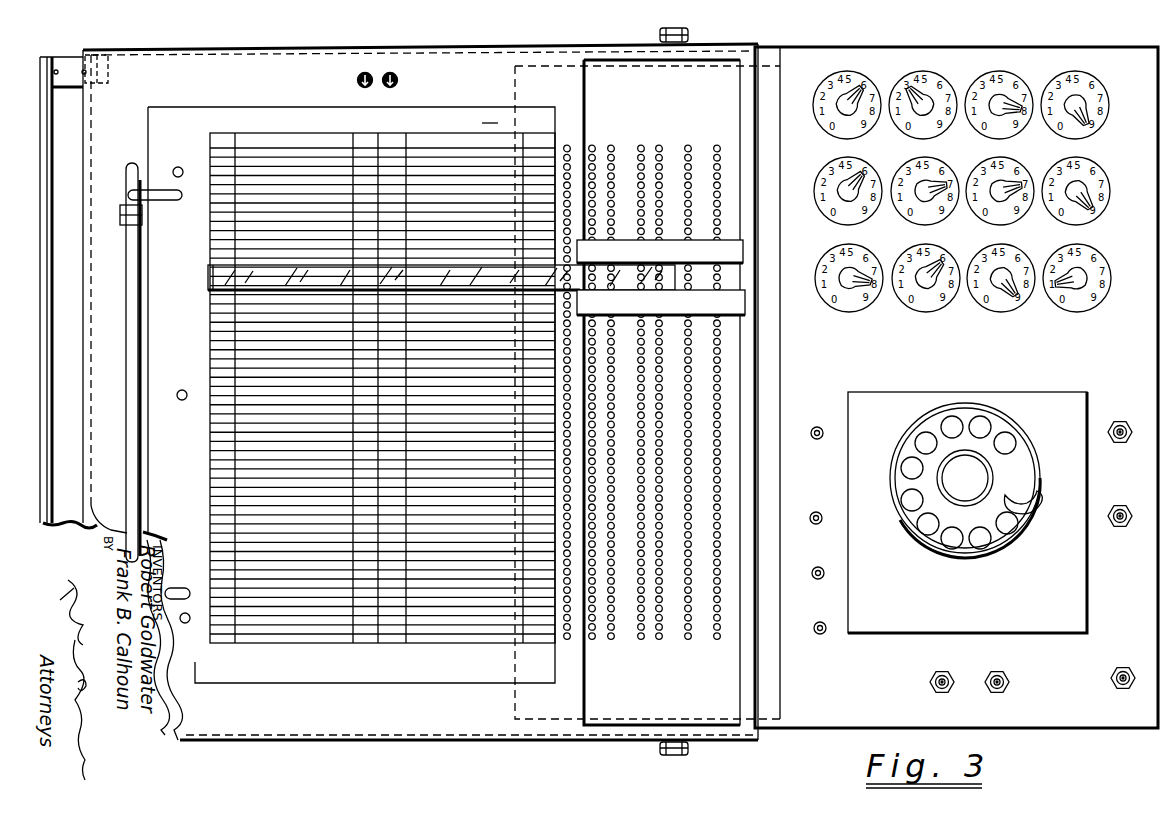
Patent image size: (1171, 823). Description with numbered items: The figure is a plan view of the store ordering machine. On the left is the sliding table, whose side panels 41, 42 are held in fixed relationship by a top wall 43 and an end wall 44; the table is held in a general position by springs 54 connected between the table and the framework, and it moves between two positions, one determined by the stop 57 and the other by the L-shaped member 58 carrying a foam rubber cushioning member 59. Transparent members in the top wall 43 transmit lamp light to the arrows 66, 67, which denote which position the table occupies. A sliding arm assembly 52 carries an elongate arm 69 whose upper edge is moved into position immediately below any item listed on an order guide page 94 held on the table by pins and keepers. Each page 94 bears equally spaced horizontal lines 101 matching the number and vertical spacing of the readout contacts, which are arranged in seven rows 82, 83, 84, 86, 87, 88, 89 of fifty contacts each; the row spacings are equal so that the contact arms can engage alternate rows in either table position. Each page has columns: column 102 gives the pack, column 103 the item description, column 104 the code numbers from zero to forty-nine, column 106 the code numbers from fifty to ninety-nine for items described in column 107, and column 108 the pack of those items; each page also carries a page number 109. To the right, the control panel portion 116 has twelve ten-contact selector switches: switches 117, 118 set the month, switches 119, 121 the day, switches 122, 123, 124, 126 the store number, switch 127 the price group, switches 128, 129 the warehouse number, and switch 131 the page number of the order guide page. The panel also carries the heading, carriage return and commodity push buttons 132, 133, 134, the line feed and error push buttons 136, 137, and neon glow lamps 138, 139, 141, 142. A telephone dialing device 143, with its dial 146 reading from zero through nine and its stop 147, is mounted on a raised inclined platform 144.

The side panel 41 is at (372, 742).
The side panel 42 is at (275, 47).
The top wall 43 is at (254, 95).
The end wall 44 is at (78, 71).
The sliding arm assembly 52 is at (700, 312).
The springs 54 is at (664, 30).
The stop 57 is at (40, 69).
The L-shaped member 58 is at (109, 60).
The foam rubber cushioning member 59 is at (97, 66).
The arrow 66 is at (357, 80).
The arrow 67 is at (398, 80).
The arm 69 is at (210, 280).
The row of contacts 82 is at (565, 141).
The row of contacts 83 is at (592, 140).
The row of contacts 84 is at (611, 140).
The row of contacts 86 is at (641, 140).
The row of contacts 87 is at (659, 140).
The row of contacts 88 is at (688, 140).
The row of contacts 89 is at (717, 140).
The order guide page 94 is at (188, 116).
The horizontal lines 101 is at (211, 215).
The column 102 is at (230, 643).
The column 103 is at (302, 643).
The column 104 is at (359, 132).
The column 106 is at (393, 133).
The column 107 is at (470, 643).
The column 108 is at (539, 132).
The page number 109 is at (484, 108).
The control panel portion 116 is at (1043, 46).
The selector switch 117 is at (819, 83).
The selector switch 118 is at (910, 78).
The selector switch 119 is at (984, 78).
The selector switch 121 is at (1036, 86).
The selector switch 122 is at (830, 222).
The selector switch 123 is at (912, 220).
The selector switch 124 is at (1017, 219).
The selector switch 126 is at (1092, 219).
The selector switch 127 is at (826, 299).
The selector switch 128 is at (907, 310).
The selector switch 129 is at (1004, 308).
The selector switch 131 is at (1084, 306).
The heading push button 132 is at (1116, 420).
The carriage return push button 133 is at (946, 674).
The commodity push button 134 is at (1120, 505).
The line feed push button 136 is at (1002, 674).
The error push button 137 is at (1119, 671).
The lamp 138 is at (823, 633).
The lamp 139 is at (817, 580).
The lamp 141 is at (815, 511).
The lamp 142 is at (817, 426).
The telephone dialing device 143 is at (1038, 441).
The raised inclined platform 144 is at (1056, 392).
The dial 146 is at (1025, 464).
The stop 147 is at (1042, 496).